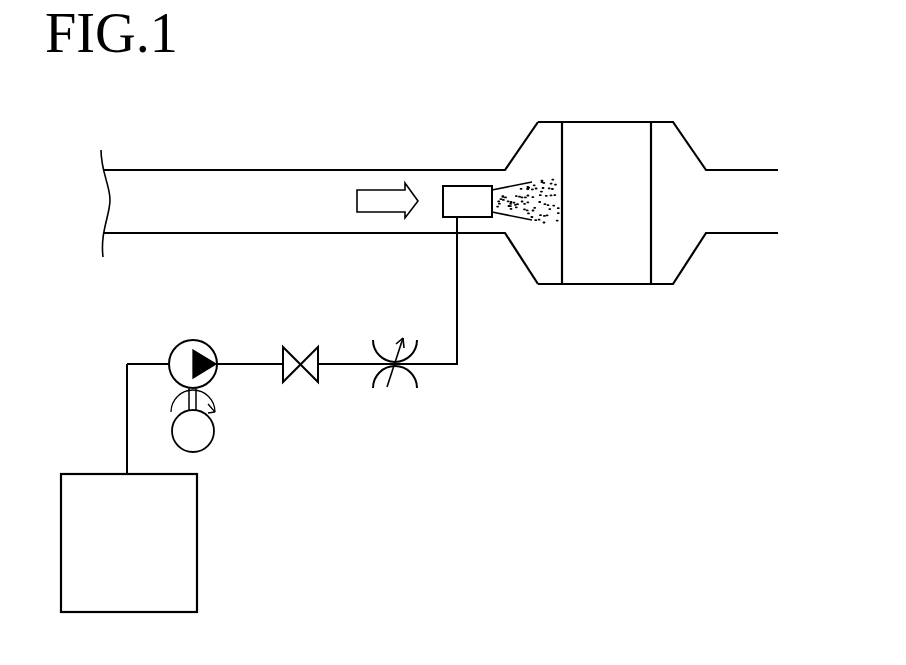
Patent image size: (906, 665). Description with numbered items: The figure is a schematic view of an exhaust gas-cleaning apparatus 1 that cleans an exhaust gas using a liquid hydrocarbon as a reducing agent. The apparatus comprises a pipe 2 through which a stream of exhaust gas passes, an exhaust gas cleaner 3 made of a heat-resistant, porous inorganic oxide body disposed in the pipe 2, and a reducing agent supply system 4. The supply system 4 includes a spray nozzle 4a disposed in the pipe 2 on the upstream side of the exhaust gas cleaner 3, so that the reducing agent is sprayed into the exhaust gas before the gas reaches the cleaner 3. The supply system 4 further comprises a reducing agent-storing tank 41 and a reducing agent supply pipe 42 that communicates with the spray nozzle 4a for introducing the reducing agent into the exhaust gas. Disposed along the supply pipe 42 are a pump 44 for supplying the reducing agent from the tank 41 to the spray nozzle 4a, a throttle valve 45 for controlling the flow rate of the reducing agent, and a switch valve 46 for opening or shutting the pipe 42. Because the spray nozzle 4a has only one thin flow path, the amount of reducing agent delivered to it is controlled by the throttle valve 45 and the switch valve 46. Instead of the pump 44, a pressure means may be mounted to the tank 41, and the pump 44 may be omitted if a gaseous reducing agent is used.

The exhaust gas-cleaning apparatus 1 is at (403, 130).
The pipe 2 is at (340, 168).
The exhaust gas cleaner 3 is at (610, 137).
The reducing agent supply system 4 is at (503, 353).
The spray nozzle 4a is at (463, 186).
The reducing agent-storing tank 41 is at (168, 538).
The reducing agent supply pipe 42 is at (457, 295).
The pump 44 is at (175, 345).
The throttle valve 45 is at (310, 347).
The switch valve 46 is at (408, 390).